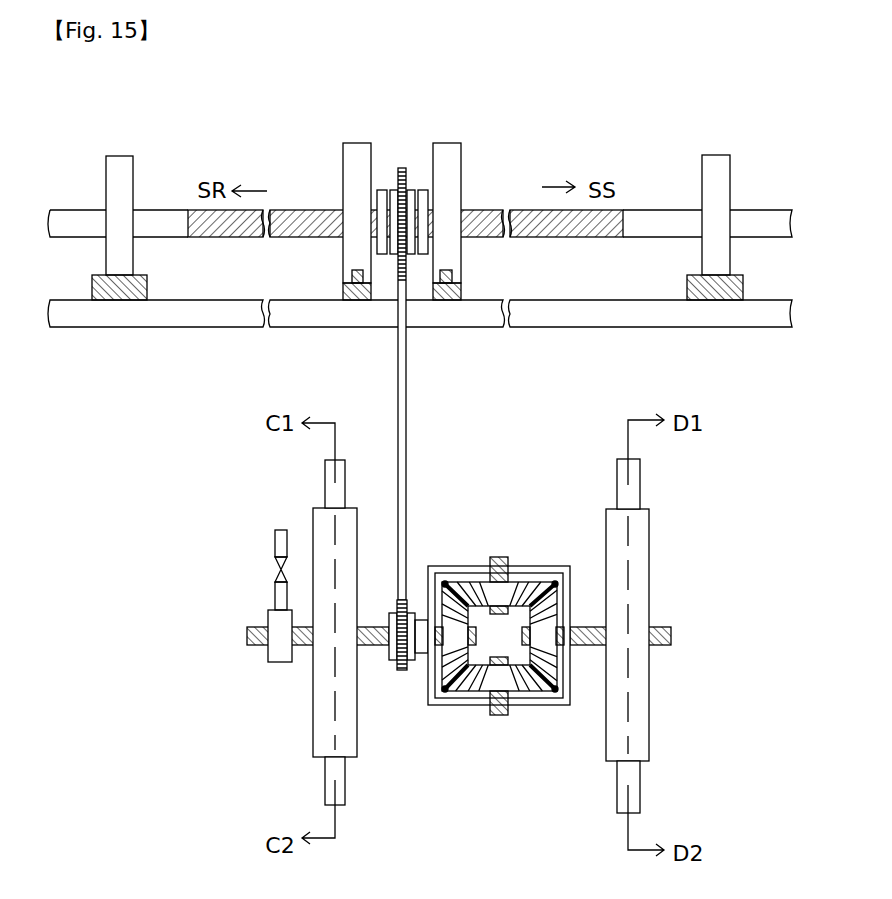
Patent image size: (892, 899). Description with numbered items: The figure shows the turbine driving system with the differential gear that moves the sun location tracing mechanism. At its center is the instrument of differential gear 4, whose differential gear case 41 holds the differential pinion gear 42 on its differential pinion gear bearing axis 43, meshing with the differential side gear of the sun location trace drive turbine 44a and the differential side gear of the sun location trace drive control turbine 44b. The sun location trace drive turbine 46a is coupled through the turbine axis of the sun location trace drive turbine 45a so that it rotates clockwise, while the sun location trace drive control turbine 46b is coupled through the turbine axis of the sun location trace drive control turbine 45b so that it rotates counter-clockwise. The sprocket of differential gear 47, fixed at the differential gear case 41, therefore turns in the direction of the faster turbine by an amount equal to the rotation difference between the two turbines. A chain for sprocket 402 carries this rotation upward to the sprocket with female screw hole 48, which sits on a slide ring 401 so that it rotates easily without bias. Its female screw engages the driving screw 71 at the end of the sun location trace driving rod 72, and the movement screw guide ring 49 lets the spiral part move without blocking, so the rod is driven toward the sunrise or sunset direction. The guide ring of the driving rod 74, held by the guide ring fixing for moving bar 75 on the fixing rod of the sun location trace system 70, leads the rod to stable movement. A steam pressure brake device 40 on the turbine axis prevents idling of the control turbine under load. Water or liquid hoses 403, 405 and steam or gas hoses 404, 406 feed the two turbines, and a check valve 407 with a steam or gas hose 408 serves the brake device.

The instrument of differential gear 4 is at (553, 566).
The steam pressure brake device 40 is at (280, 647).
The differential gear case 41 is at (440, 568).
The differential pinion gear 42 is at (465, 590).
The differential pinion gear bearing axis 43 is at (498, 557).
The differential side gear of the sun location trace drive turbine 44a is at (452, 672).
The differential side gear of the sun location trace drive control turbine 44b is at (545, 672).
The turbine axis of the sun location trace drive turbine 45a is at (247, 636).
The turbine axis of the sun location trace drive control turbine 45b is at (671, 639).
The sun location trace drive turbine 46a is at (323, 742).
The sun location trace drive control turbine 46b is at (641, 570).
The sprocket of differential gear 47 is at (393, 653).
The sprocket with female screw hole 48 is at (410, 255).
The movement screw guide ring 49 is at (358, 143).
The fixing rod of the sun location trace system 70 is at (587, 313).
The driving screw 71 is at (297, 210).
The sun location trace driving rod 72 is at (170, 210).
The guide ring of the driving rod 74 is at (117, 156).
The guide ring fixing for moving bar 75 is at (92, 289).
The slide ring 401 is at (383, 190).
The chain for sprocket 402 is at (407, 430).
The water (or liquid) hose 403 is at (325, 480).
The steam (or gas) hose 404 is at (325, 791).
The water (or liquid) hose 405 is at (640, 787).
The steam (or gas) hose 406 is at (628, 487).
The check valve 407 is at (283, 570).
The steam (or gas) hose 408 is at (275, 545).